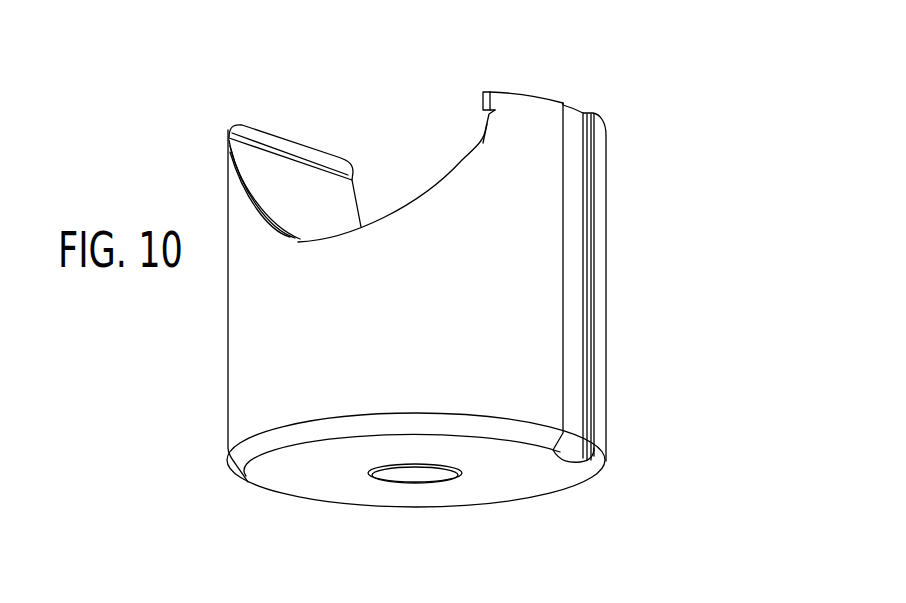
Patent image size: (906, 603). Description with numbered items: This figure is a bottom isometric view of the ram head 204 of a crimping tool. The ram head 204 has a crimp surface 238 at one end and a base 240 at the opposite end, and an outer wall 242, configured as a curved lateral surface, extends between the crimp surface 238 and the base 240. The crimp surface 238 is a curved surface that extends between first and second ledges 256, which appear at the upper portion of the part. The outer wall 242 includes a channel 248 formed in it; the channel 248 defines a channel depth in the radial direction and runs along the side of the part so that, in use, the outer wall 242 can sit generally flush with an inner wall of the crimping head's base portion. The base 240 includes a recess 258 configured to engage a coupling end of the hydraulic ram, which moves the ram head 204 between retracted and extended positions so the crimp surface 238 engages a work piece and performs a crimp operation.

The ram head 204 is at (668, 168).
The crimp surface 238 is at (283, 197).
The base 240 is at (312, 473).
The outer wall 242 is at (263, 360).
The channel 248 is at (569, 420).
The ledges 256 is at (272, 142).
The recess 258 is at (415, 474).